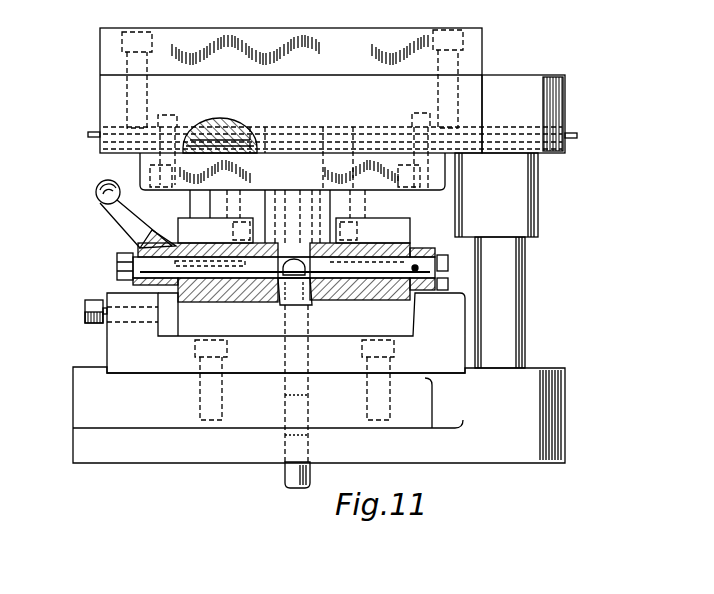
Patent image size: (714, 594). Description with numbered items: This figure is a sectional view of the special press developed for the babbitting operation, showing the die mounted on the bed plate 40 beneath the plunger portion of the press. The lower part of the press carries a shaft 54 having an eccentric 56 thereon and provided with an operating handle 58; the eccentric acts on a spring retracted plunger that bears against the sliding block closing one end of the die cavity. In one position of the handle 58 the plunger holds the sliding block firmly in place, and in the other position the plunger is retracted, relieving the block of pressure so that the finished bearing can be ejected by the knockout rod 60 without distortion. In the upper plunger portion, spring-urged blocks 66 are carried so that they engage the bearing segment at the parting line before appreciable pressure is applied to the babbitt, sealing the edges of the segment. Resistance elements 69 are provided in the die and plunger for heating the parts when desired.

The bed plate 40 is at (212, 452).
The shaft 54 is at (213, 272).
The eccentric 56 is at (303, 283).
The operating handle 58 is at (98, 198).
The knockout rod 60 is at (275, 402).
The blocks 66 is at (238, 232).
The resistance elements 69 is at (94, 138).